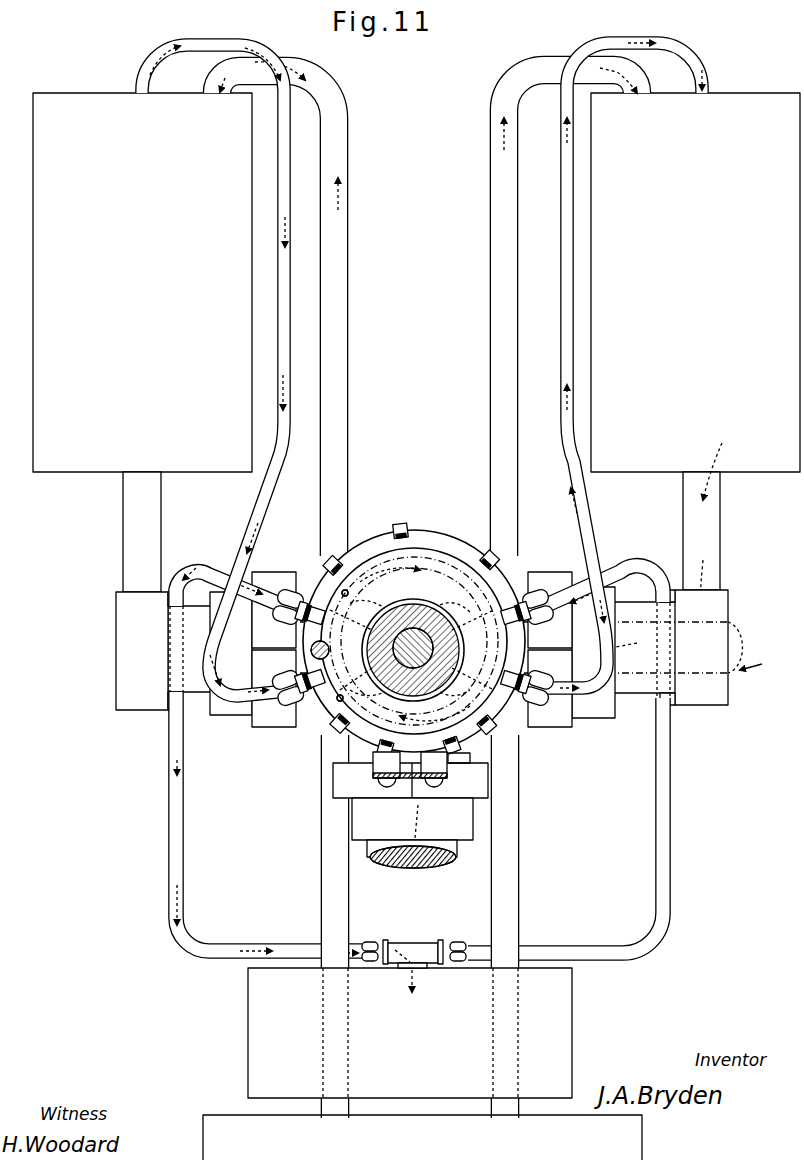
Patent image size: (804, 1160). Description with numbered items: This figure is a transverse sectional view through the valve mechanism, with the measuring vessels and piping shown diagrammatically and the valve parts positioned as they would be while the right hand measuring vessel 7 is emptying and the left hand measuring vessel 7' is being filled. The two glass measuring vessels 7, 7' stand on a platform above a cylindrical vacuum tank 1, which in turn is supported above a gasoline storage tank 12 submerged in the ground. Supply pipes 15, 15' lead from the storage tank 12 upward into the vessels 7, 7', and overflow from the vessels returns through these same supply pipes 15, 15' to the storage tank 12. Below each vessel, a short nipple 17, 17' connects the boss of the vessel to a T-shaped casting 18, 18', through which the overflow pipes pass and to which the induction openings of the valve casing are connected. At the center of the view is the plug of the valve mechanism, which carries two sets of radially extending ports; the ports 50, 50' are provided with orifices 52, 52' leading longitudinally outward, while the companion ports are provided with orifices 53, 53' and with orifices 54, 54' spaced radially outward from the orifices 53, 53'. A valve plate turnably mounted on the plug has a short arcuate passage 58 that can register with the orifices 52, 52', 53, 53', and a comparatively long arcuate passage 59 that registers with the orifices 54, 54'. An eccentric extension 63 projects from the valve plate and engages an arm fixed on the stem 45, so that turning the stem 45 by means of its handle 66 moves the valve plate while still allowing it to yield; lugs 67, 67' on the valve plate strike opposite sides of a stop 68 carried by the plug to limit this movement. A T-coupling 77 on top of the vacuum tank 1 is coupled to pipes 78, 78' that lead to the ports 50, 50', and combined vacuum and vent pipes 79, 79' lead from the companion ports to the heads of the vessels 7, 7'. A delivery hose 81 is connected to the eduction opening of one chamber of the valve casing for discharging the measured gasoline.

The vacuum tank 1 is at (550, 1012).
The right hand measuring vessel 7 is at (695, 282).
The left hand measuring vessel 7' is at (142, 282).
The gasoline storage tank 12 is at (213, 1115).
The supply pipe 15 is at (540, 593).
The supply pipe 15' is at (300, 590).
The nipple 17 is at (718, 527).
The nipple 17' is at (119, 532).
The T-shaped casting 18 is at (532, 647).
The T-shaped casting 18' is at (140, 651).
The stem 45 is at (413, 630).
The port 50 is at (527, 586).
The port 50' is at (315, 572).
The orifice 52 is at (455, 600).
The orifice 52' is at (367, 594).
The orifice 53 is at (452, 702).
The orifice 53' is at (367, 703).
The orifice 54 is at (527, 707).
The orifice 54' is at (314, 723).
The short arcuate passage 58 is at (296, 636).
The long arcuate passage 59 is at (478, 745).
The extension 63 is at (300, 660).
The handle 66 is at (754, 647).
The lug 67 is at (382, 775).
The lug 67' is at (414, 627).
The stop 68 is at (352, 800).
The T-coupling 77 is at (420, 945).
The pipe 78 is at (569, 778).
The pipe 78' is at (266, 779).
The combined vacuum and vent pipe 79 is at (573, 365).
The combined vacuum and vent pipe 79' is at (263, 370).
The delivery hose 81 is at (414, 862).